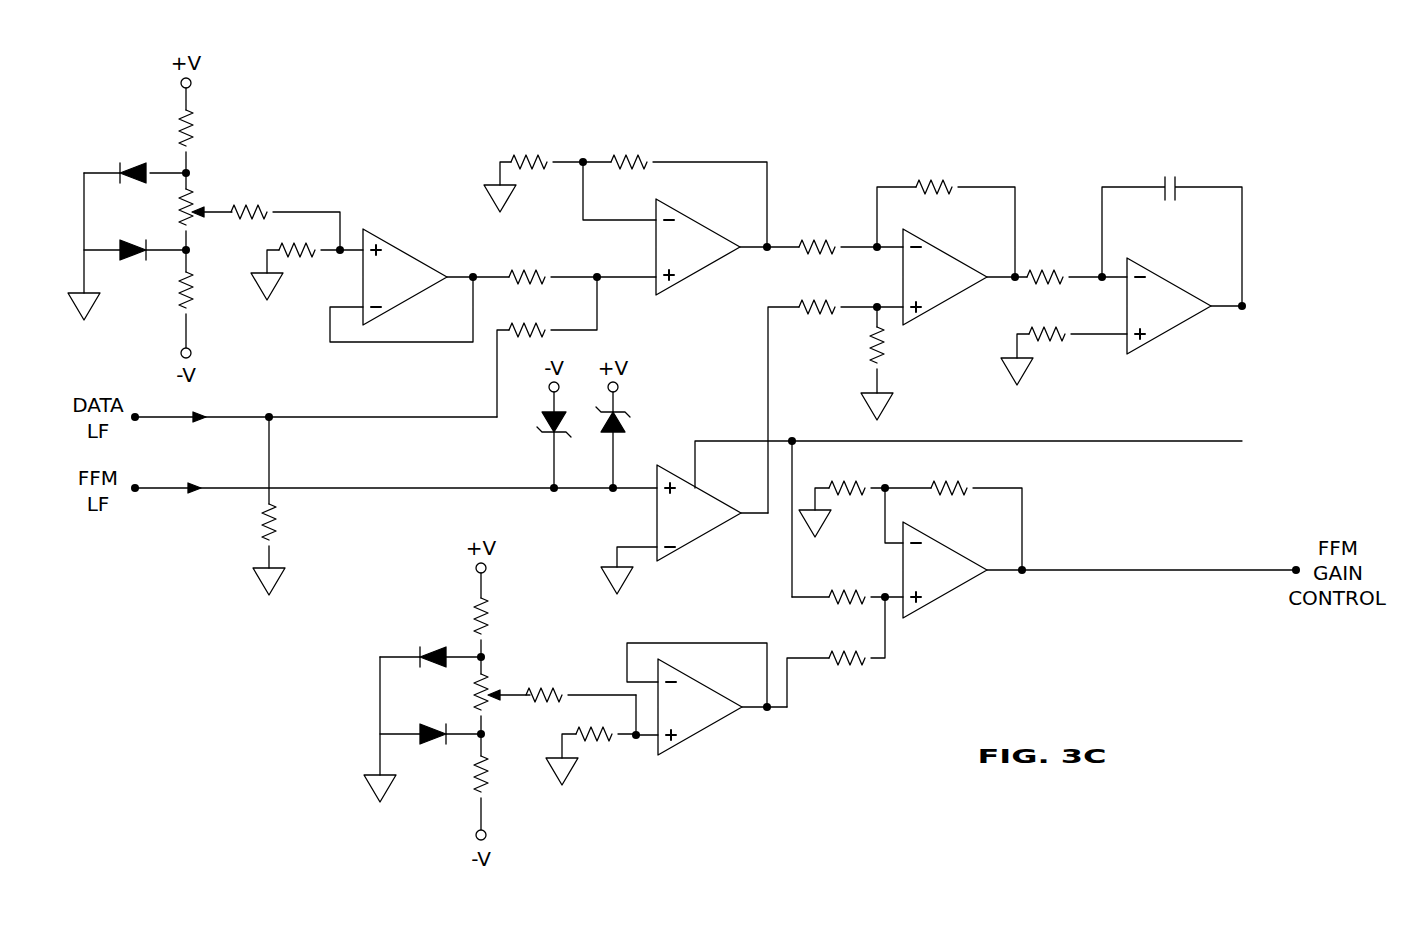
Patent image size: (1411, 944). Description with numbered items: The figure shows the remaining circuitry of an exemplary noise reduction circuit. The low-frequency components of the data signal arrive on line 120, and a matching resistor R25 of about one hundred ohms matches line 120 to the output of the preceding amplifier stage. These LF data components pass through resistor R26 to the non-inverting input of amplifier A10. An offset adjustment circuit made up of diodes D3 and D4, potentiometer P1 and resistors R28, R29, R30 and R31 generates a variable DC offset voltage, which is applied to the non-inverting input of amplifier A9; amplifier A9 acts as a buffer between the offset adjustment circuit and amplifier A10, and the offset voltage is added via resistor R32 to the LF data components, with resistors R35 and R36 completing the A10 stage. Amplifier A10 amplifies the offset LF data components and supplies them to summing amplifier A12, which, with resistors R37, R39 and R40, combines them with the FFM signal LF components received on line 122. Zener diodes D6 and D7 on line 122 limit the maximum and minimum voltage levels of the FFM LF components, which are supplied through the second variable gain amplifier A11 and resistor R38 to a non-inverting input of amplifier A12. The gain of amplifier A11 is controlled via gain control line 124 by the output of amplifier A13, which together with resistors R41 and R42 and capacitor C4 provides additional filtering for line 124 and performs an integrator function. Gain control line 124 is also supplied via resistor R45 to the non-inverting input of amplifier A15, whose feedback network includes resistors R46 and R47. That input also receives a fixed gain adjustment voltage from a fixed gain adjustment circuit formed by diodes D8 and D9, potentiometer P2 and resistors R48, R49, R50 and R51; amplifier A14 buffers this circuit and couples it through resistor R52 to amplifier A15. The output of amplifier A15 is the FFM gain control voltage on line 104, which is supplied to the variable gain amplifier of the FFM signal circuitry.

The resistor R28 is at (202, 141).
The diode D3 is at (135, 159).
The potentiometer P1 is at (190, 211).
The resistor R30 is at (285, 215).
The resistor R31 is at (307, 259).
The diode D4 is at (135, 267).
The resistor R29 is at (202, 299).
The amplifier A9 is at (401, 285).
The resistor R32 is at (564, 262).
The resistor R26 is at (547, 347).
The resistor R35 is at (533, 171).
The resistor R36 is at (675, 188).
The amplifier A10 is at (711, 247).
The resistor R37 is at (835, 234).
The resistor R38 is at (835, 394).
The resistor R39 is at (856, 363).
The resistor R40 is at (946, 216).
The summing amplifier A12 is at (959, 277).
The resistor R41 is at (1071, 263).
The resistor R42 is at (1064, 344).
The amplifier A13 is at (1184, 306).
The capacitor C4 is at (1172, 228).
The line 120 is at (170, 419).
The line 122 is at (165, 490).
The matching resistor R25 is at (288, 506).
The Zener diode D6 is at (537, 440).
The Zener diode D7 is at (631, 440).
The second variable gain amplifier A11 is at (684, 529).
The gain control line 124 is at (737, 439).
The resistor R46 is at (842, 496).
The resistor R47 is at (953, 512).
The amplifier A15 is at (962, 570).
The resistor R45 is at (847, 584).
The resistor R52 is at (836, 652).
The line 104 is at (1128, 572).
The resistor R48 is at (505, 627).
The diode D8 is at (430, 642).
The potentiometer P2 is at (486, 695).
The resistor R50 is at (580, 682).
The resistor R51 is at (591, 744).
The diode D9 is at (430, 751).
The resistor R49 is at (505, 782).
The amplifier A14 is at (707, 699).